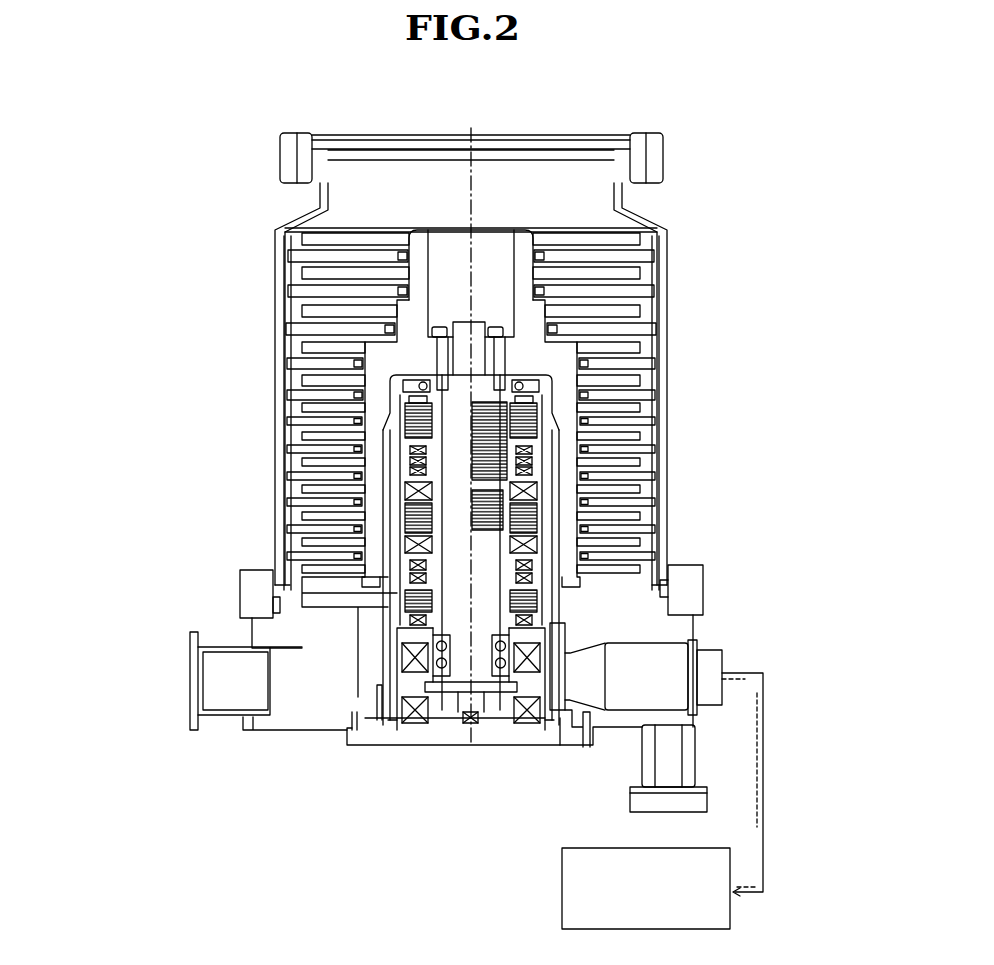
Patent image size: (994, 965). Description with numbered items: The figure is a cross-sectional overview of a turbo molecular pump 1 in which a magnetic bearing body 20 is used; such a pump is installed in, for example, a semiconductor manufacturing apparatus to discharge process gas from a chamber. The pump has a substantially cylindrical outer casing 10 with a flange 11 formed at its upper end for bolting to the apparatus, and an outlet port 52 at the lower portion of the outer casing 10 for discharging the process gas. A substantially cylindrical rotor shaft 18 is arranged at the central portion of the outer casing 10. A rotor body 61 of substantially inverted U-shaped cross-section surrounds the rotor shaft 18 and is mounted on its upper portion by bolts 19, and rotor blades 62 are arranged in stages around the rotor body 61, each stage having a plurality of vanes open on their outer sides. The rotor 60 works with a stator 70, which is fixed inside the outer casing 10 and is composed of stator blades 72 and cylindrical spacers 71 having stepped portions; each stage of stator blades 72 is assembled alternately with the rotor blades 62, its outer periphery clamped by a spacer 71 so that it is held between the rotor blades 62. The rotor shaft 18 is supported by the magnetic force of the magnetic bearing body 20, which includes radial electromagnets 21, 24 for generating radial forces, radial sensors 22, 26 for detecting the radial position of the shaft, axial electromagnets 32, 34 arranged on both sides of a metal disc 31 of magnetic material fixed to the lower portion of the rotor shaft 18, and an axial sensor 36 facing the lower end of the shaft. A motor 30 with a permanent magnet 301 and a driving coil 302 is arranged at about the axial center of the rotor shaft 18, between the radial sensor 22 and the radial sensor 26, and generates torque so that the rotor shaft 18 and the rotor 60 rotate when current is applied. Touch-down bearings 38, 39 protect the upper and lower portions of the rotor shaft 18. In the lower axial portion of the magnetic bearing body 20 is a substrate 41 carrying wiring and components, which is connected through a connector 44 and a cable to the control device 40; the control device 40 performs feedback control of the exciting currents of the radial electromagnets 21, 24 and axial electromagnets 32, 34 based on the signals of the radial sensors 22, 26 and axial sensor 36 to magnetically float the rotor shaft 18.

The turbo molecular pump 1 is at (565, 440).
The outer casing 10 is at (666, 218).
The flange 11 is at (668, 153).
The rotor shaft 18 is at (500, 620).
The bolts 19 is at (442, 332).
The magnetic bearing body 20 is at (545, 420).
The radial electromagnet 21 is at (398, 410).
The radial sensor 22 is at (398, 463).
The radial electromagnet 24 is at (398, 598).
The radial sensor 26 is at (398, 563).
The motor 30 is at (531, 521).
The metal disc 31 is at (438, 690).
The axial electromagnet 32 is at (402, 657).
The axial electromagnet 34 is at (413, 722).
The axial sensor 36 is at (465, 724).
The touch-down bearing 38 is at (407, 375).
The touch-down bearing 39 is at (433, 638).
The control device 40 is at (646, 888).
The substrate 41 is at (520, 748).
The connector 44 is at (740, 642).
The outlet port 52 is at (187, 657).
The rotor 60 is at (574, 408).
The rotor body 61 is at (562, 378).
The rotor blades 62 is at (615, 345).
The stator 70 is at (355, 413).
The spacer 71 is at (275, 238).
The stator blades 72 is at (274, 257).
The permanent magnet 301 is at (497, 533).
The driving coil 302 is at (542, 485).